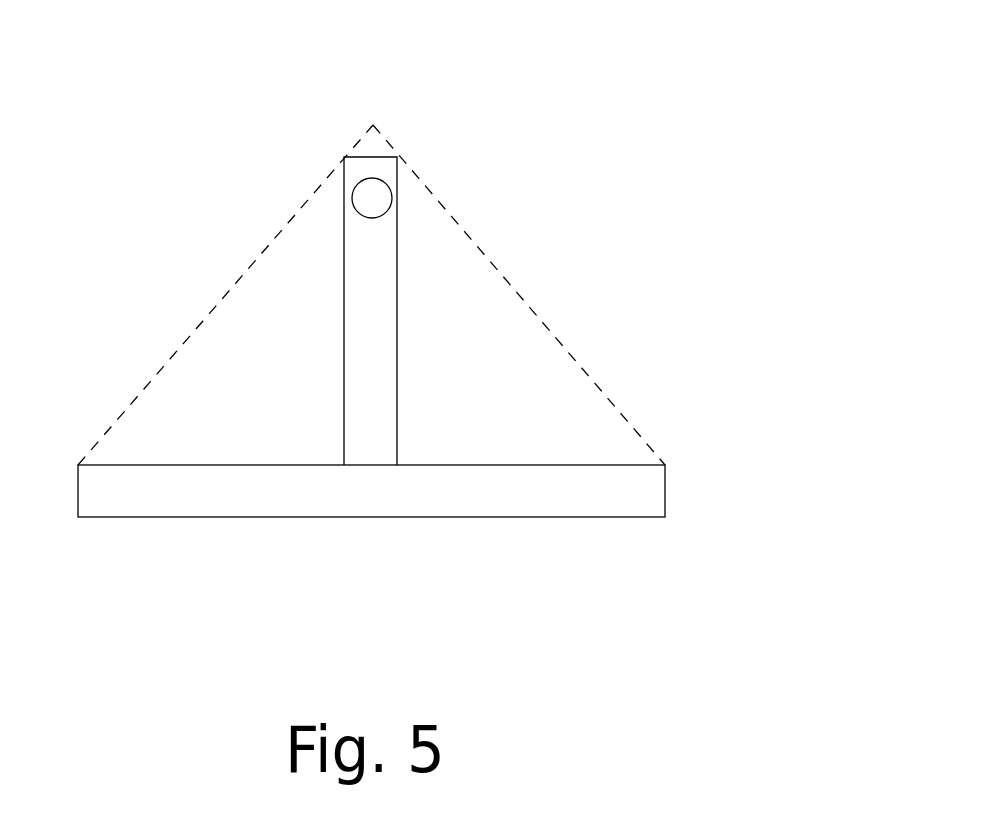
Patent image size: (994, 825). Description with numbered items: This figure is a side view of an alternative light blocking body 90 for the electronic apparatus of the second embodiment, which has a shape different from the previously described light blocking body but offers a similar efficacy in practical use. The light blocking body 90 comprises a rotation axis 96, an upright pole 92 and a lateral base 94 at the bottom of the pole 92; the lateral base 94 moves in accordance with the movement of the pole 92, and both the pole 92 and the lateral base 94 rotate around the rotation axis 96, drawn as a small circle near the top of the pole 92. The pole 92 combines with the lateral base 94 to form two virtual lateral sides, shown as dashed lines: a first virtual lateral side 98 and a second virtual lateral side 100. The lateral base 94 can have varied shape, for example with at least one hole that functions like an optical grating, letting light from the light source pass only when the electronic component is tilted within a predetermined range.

The light blocking body 90 is at (486, 319).
The pole 92 is at (397, 253).
The lateral base 94 is at (179, 517).
The rotation axis 96 is at (372, 198).
The first virtual lateral side 98 is at (185, 343).
The second virtual lateral side 100 is at (555, 338).